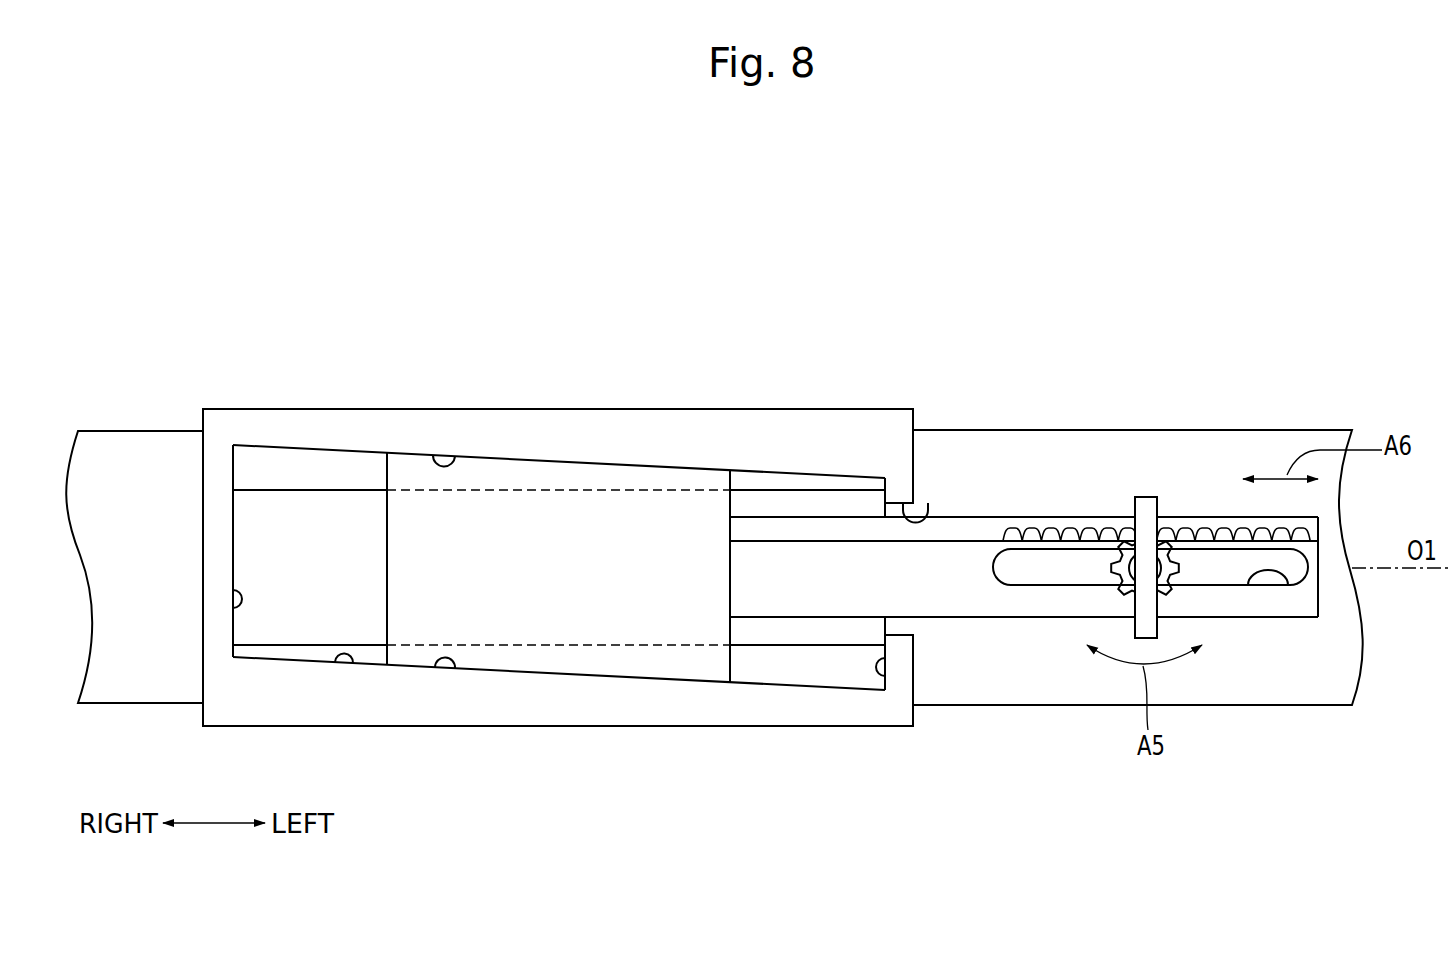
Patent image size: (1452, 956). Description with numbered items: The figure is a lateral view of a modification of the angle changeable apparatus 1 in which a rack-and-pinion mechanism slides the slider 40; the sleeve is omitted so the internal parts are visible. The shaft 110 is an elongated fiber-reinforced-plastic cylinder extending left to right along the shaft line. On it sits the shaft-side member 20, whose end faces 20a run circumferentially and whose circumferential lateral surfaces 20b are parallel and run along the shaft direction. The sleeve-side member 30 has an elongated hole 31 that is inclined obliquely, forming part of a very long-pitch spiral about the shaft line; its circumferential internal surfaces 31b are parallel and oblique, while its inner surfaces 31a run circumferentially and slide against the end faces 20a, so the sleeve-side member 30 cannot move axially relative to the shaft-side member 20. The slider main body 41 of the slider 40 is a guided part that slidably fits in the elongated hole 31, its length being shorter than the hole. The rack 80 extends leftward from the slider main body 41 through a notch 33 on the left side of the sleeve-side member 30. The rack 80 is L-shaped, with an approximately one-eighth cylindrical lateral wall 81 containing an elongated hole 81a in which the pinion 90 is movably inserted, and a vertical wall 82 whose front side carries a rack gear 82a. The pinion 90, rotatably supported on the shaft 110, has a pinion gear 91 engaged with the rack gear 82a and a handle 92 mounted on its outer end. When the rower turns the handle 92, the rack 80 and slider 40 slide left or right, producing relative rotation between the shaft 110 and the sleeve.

The angle changeable apparatus 1 is at (717, 203).
The shaft-side member 20 is at (813, 650).
The end face 20a is at (233, 557).
The circumferential lateral surface 20b is at (793, 490).
The sleeve-side member 30 is at (298, 408).
The elongated hole 31 is at (344, 665).
The inner surface 31a is at (245, 604).
The circumferential internal surface 31b is at (436, 452).
The notch 33 is at (928, 503).
The slider 40 is at (580, 460).
The slider main body 41 is at (527, 655).
The rack 80 is at (1065, 517).
The lateral wall 81 is at (1263, 605).
The elongated hole 81a is at (1272, 545).
The vertical wall 82 is at (1212, 523).
The rack gear 82a is at (1287, 553).
The pinion 90 is at (1184, 570).
The pinion gear 91 is at (1172, 583).
The handle 92 is at (1143, 603).
The shaft 110 is at (979, 706).